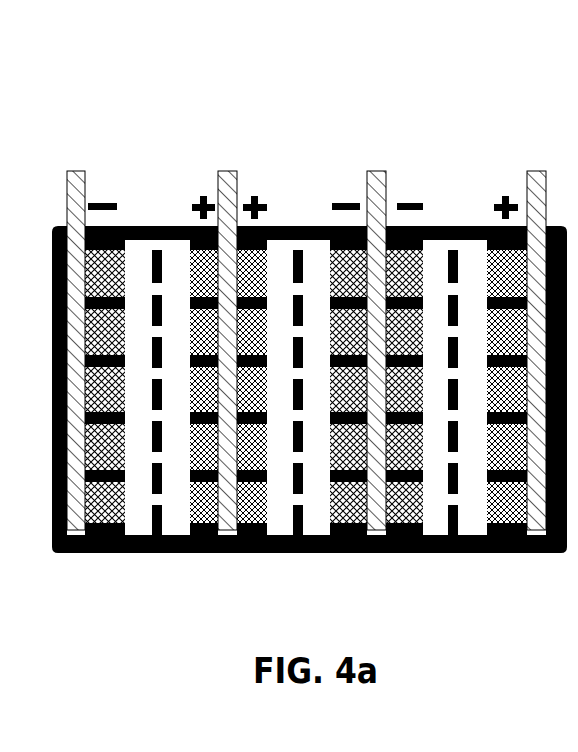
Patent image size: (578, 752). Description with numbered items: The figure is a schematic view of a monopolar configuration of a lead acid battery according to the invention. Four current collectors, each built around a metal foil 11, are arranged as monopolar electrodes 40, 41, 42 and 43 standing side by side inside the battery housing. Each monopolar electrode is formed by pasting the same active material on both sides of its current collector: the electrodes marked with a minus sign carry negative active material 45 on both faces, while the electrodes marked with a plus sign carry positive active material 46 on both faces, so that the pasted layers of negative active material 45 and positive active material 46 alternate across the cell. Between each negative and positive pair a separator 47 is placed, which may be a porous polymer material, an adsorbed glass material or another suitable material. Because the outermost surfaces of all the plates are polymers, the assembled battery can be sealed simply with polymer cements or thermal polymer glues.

The metal foil 11 is at (77, 170).
The monopolar electrode 40 is at (97, 138).
The monopolar electrode 41 is at (228, 138).
The monopolar electrode 42 is at (385, 138).
The monopolar electrode 43 is at (520, 138).
The negative active material 45 is at (107, 503).
The positive active material 46 is at (198, 535).
The separator 47 is at (157, 247).